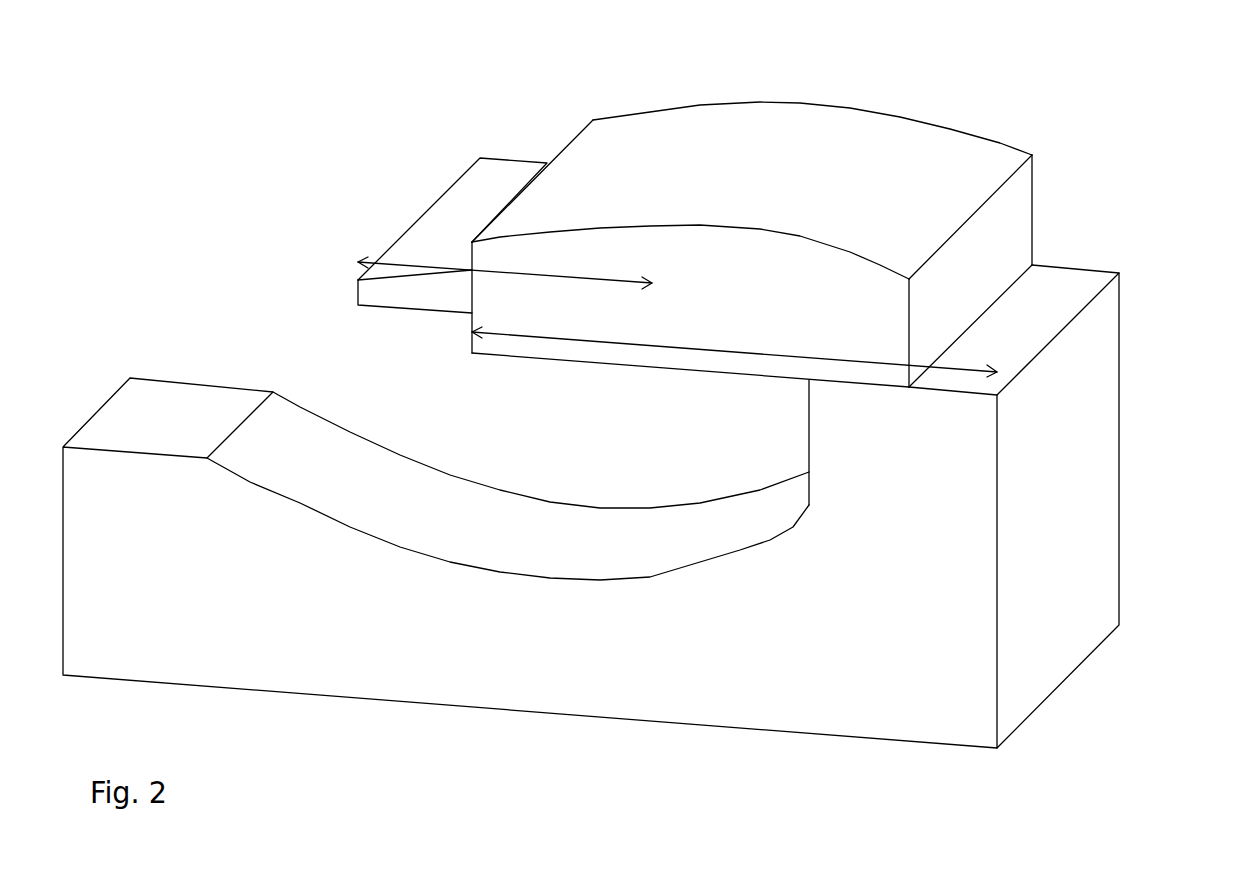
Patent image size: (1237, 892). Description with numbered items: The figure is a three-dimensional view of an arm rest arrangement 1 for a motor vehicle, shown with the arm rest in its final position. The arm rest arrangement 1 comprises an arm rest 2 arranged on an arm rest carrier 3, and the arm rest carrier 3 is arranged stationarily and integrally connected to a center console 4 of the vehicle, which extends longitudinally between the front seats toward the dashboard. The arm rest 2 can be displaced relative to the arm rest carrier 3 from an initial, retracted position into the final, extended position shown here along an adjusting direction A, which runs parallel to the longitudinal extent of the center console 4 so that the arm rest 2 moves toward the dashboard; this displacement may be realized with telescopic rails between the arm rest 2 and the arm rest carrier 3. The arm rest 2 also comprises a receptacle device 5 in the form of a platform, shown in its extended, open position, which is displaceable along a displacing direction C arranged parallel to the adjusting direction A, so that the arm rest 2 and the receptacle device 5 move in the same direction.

The arm rest arrangement 1 is at (137, 143).
The arm rest 2 is at (906, 171).
The arm rest carrier 3 is at (917, 436).
The center console 4 is at (226, 555).
The receptacle device 5 is at (487, 202).